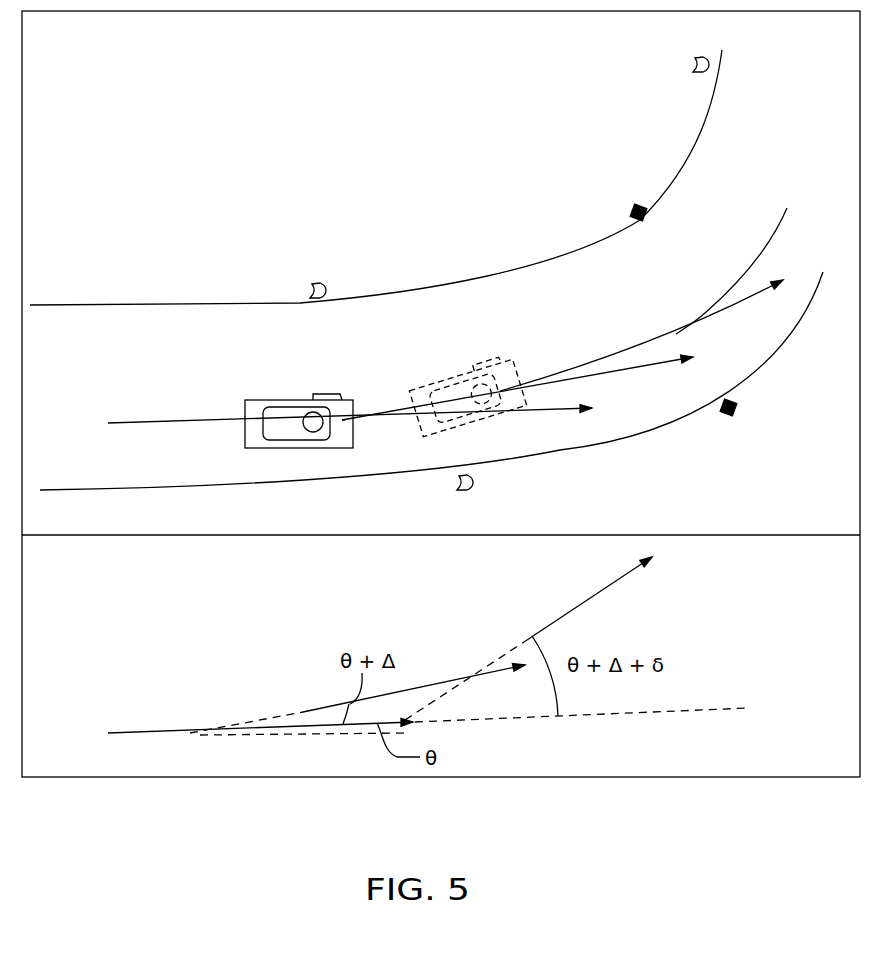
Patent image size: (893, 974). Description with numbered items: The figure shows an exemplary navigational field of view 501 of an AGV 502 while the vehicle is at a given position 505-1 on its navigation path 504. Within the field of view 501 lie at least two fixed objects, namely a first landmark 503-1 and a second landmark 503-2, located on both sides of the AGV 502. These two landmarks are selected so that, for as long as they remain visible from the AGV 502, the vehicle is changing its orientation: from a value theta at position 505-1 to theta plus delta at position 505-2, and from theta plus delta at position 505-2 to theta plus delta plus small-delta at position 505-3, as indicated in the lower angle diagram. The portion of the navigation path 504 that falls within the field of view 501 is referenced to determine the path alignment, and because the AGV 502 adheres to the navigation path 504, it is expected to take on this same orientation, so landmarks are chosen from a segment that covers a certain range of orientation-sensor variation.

The navigational field of view 501 is at (535, 297).
The AGV 502 is at (284, 400).
The first fixed object (Landmark 1) 503-1 is at (642, 212).
The second fixed object (Landmark 2) 503-2 is at (740, 405).
The navigation path 504 is at (108, 420).
The first position 505-1 is at (342, 418).
The second position 505-2 is at (497, 405).
The third position 505-3 is at (668, 338).